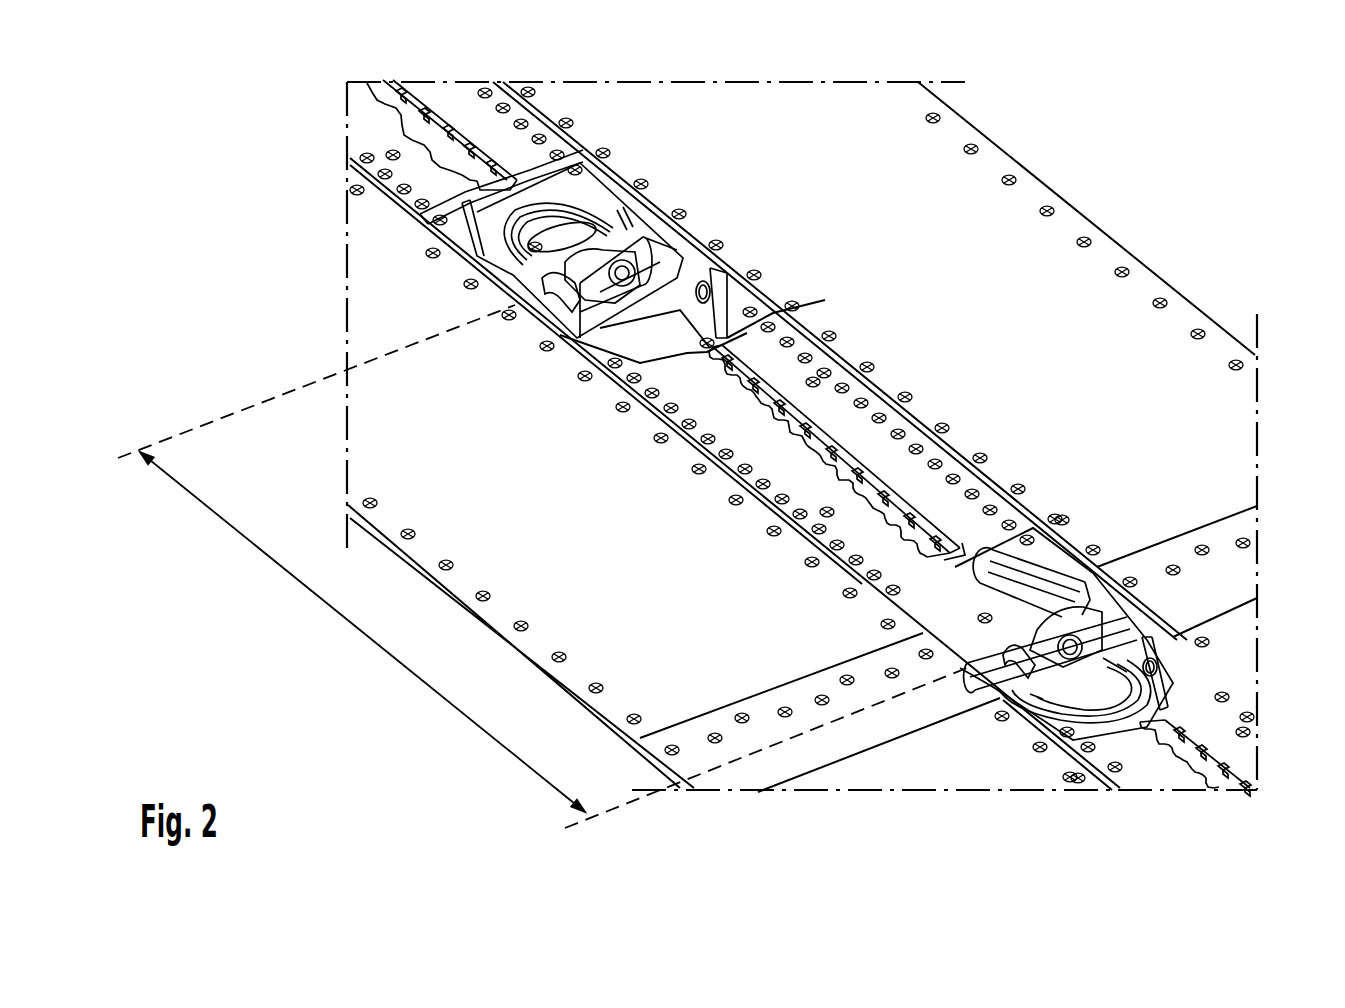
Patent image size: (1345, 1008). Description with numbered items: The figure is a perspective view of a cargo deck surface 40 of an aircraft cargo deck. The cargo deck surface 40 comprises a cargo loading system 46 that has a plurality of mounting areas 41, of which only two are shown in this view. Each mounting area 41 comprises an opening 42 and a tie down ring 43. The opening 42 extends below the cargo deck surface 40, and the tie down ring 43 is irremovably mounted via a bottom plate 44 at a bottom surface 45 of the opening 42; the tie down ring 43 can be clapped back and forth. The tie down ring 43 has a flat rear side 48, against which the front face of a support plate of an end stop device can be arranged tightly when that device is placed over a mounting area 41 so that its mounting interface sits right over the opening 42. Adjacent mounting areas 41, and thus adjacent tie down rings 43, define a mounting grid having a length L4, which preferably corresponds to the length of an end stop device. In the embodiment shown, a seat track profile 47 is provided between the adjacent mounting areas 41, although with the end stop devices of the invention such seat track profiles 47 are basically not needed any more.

The cargo deck surface 40 is at (1137, 290).
The mounting area 41 is at (660, 203).
The opening 42 is at (700, 326).
The tie down ring 43 is at (553, 213).
The bottom plate 44 is at (683, 308).
The bottom surface 45 is at (727, 338).
The cargo loading system 46 is at (1172, 130).
The seat track profile 47 is at (817, 421).
The flat rear side 48 is at (584, 318).
The length L4 is at (362, 636).